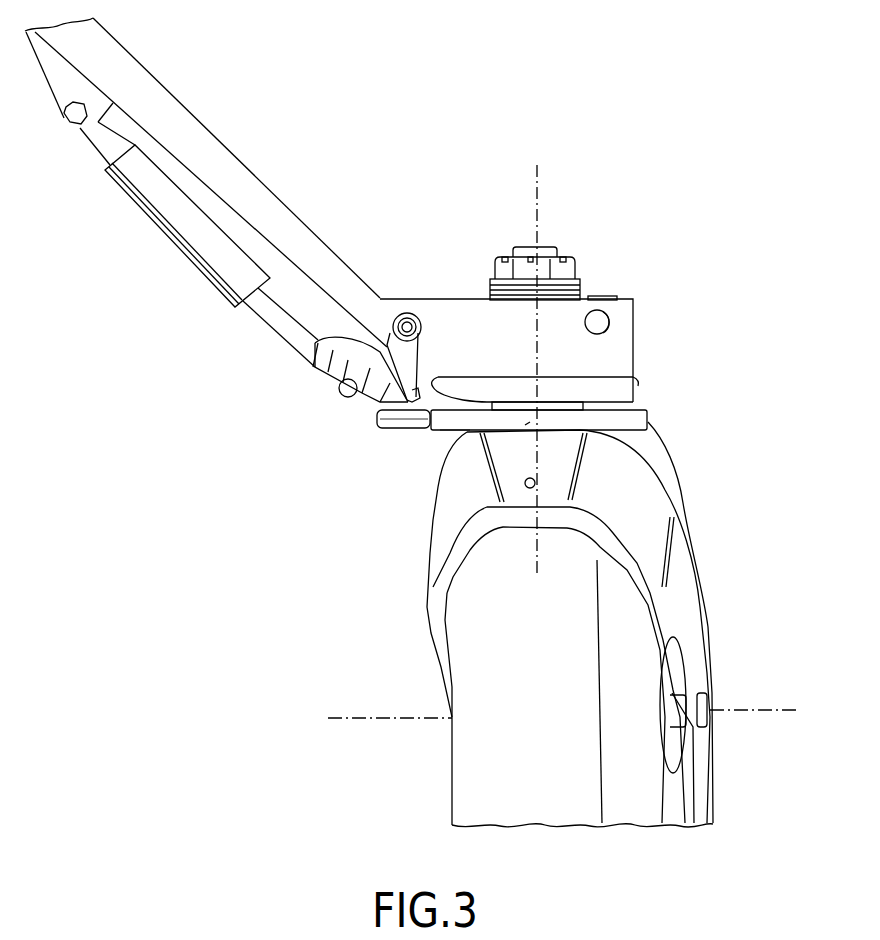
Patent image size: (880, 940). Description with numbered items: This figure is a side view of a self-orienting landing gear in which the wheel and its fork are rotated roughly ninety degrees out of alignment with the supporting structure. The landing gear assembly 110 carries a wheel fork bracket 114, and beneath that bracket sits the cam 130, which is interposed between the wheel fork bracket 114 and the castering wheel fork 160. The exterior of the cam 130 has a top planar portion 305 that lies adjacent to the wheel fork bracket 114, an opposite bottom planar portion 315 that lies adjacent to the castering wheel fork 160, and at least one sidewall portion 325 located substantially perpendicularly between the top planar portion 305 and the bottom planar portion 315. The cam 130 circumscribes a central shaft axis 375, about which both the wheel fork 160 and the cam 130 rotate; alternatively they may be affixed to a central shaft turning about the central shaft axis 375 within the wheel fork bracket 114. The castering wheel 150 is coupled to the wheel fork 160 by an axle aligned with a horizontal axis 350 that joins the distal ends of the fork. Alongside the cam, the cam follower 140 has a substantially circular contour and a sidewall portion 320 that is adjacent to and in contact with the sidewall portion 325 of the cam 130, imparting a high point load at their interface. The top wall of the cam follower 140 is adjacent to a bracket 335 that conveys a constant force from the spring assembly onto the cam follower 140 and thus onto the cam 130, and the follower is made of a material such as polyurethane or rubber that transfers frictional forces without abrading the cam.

The landing gear assembly 110 is at (223, 172).
The wheel fork bracket 114 is at (478, 330).
The cam 130 is at (518, 376).
The cam follower 140 is at (377, 415).
The castering wheel 150 is at (520, 778).
The castering wheel fork 160 is at (633, 497).
The top planar portion 305 is at (640, 405).
The bottom planar portion 315 is at (457, 433).
The sidewall portion 320 is at (403, 430).
The sidewall portion 325 is at (530, 422).
The bracket 335 is at (310, 350).
The horizontal axis 350 is at (340, 718).
The central shaft axis 375 is at (537, 200).